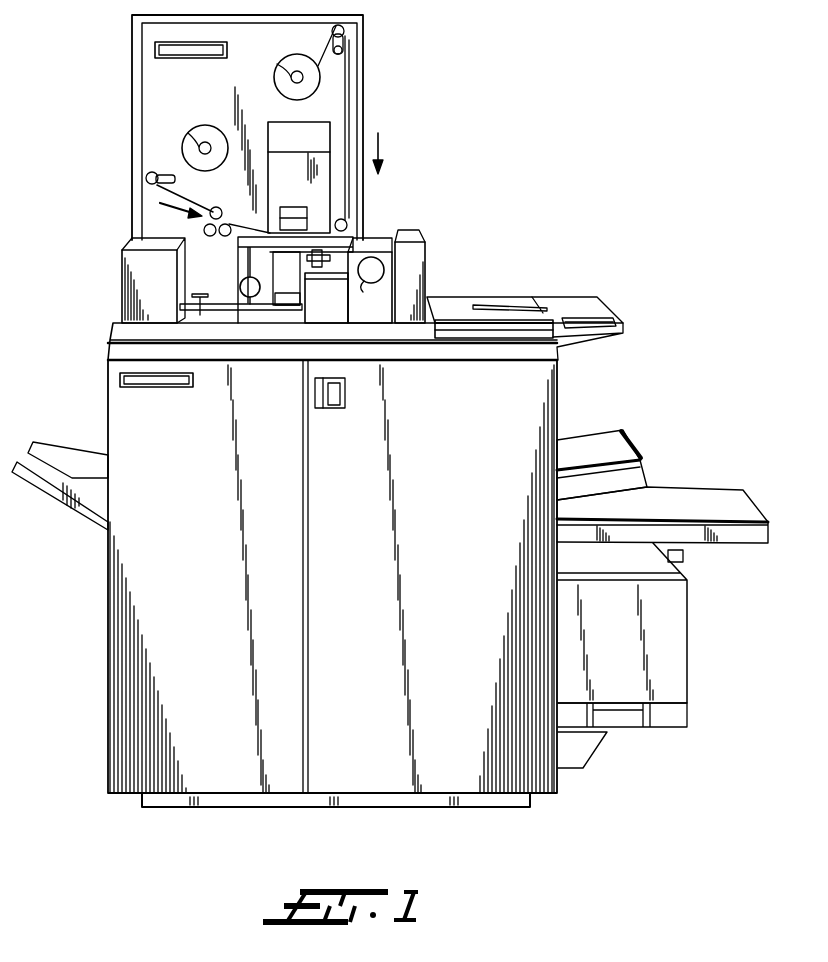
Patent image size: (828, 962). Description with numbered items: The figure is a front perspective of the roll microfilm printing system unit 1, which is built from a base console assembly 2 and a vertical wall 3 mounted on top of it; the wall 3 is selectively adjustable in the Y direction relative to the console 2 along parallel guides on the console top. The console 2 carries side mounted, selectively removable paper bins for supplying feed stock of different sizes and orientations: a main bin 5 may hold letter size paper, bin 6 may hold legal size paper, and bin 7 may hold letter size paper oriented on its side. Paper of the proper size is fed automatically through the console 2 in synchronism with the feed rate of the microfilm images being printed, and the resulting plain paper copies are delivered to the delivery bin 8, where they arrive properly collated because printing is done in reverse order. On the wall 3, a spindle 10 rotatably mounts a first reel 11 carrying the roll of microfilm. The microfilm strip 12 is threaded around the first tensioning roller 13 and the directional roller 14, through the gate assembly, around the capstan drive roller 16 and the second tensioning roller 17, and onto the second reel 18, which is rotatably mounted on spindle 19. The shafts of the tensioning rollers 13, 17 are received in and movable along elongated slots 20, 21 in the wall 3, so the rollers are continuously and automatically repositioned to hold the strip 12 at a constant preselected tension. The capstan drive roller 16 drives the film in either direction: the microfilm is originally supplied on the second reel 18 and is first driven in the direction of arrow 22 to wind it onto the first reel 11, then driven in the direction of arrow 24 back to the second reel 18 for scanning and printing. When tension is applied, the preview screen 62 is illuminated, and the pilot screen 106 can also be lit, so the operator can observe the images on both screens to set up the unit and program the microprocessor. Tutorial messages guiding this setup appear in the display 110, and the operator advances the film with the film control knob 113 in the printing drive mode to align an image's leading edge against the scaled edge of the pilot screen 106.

The roll microfilm printing system unit 1 is at (100, 330).
The base console assembly 2 is at (125, 580).
The vertical wall 3 is at (148, 85).
The main bin 5 is at (680, 647).
The bin 6 is at (693, 492).
The bin 7 is at (590, 443).
The delivery bin 8 is at (62, 492).
The spindle 10 is at (278, 66).
The first reel 11 is at (286, 53).
The microfilm strip 12 is at (350, 100).
The first tensioning roller 13 is at (346, 32).
The directional roller 14 is at (347, 220).
The capstan drive roller 16 is at (206, 238).
The second tensioning roller 17 is at (146, 177).
The second reel 18 is at (207, 125).
The spindle 19 is at (192, 140).
The elongated slot 20 is at (343, 53).
The elongated slot 21 is at (160, 188).
The arrow 22 is at (160, 205).
The arrow 24 is at (378, 140).
The preview screen 62 is at (378, 240).
The pilot screen 106 is at (425, 235).
The display 110 is at (472, 330).
The film control knob 113 is at (372, 287).